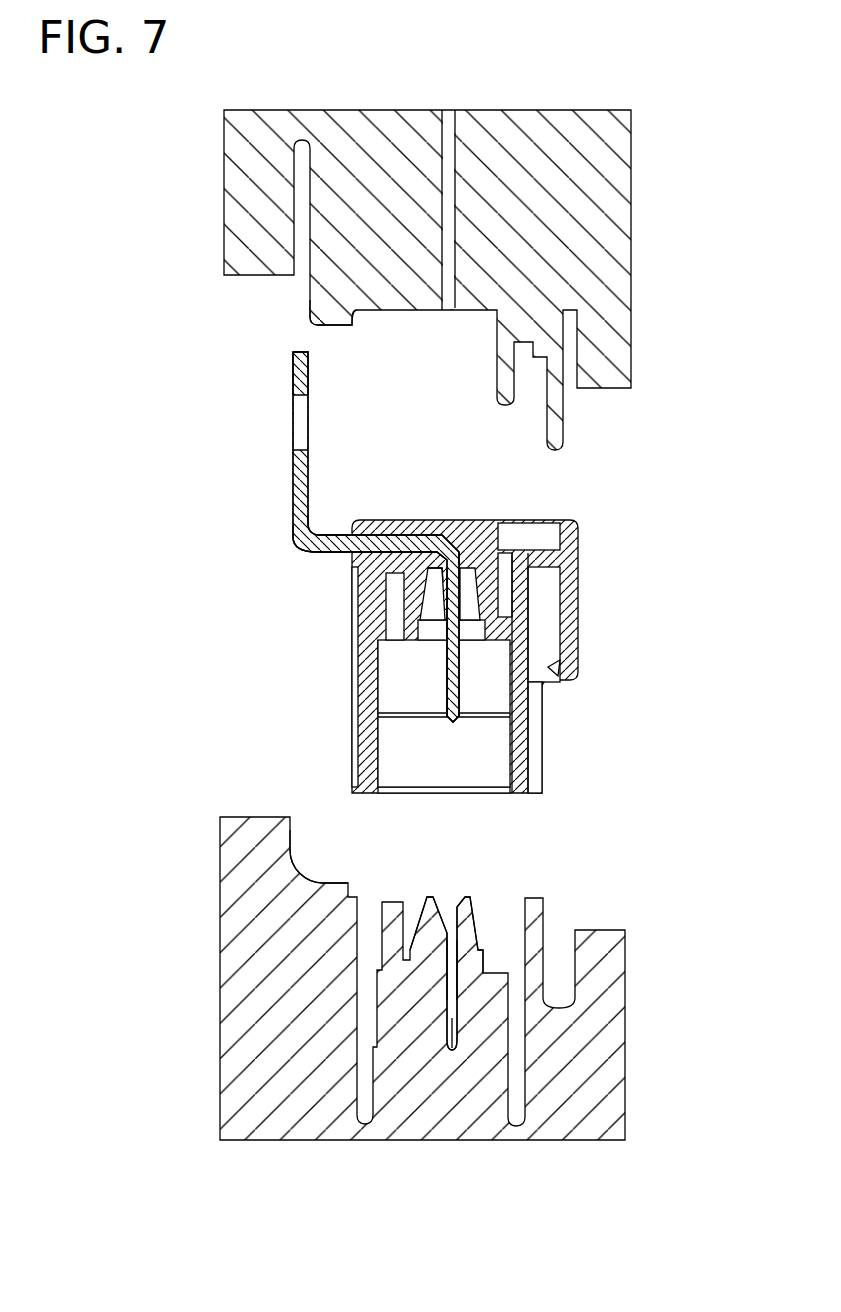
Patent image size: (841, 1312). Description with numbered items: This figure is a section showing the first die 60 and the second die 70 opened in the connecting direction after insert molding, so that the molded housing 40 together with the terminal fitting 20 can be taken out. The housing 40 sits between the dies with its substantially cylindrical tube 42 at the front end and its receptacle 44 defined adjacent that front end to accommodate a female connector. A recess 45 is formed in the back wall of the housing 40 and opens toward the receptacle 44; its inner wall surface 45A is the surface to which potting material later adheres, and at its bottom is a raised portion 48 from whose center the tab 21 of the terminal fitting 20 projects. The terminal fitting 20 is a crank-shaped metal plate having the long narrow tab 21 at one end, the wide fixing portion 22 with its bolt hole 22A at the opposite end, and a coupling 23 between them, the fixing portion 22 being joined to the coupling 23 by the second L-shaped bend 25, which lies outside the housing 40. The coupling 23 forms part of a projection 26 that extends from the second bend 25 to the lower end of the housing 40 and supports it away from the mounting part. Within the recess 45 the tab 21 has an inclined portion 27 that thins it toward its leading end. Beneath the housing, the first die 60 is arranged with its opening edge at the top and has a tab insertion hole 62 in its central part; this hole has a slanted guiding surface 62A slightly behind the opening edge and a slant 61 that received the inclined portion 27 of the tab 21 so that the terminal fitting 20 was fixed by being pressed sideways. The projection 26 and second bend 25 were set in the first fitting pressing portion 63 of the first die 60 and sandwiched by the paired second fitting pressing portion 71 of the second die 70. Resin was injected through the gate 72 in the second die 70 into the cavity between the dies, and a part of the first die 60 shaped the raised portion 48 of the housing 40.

The terminal fitting 20 is at (445, 594).
The tab 21 is at (460, 673).
The fixing portion 22 is at (298, 371).
The bolt hole 22A is at (298, 397).
The coupling 23 is at (392, 540).
The second L-shaped bend 25 is at (303, 546).
The projection 26 is at (312, 531).
The inclined portion 27 is at (438, 585).
The housing 40 is at (457, 678).
The cylindrical tube 42 is at (372, 635).
The receptacle 44 is at (519, 750).
The recess 45 is at (362, 702).
The inner wall surface 45A is at (430, 594).
The raised portion 48 is at (440, 568).
The first die 60 is at (457, 998).
The slant 61 is at (457, 917).
The tab insertion hole 62 is at (452, 1052).
The slanted guiding surface 62A is at (436, 902).
The first fitting pressing portion 63 is at (333, 878).
The second die 70 is at (461, 280).
The second fitting pressing portion 71 is at (340, 329).
The gate 72 is at (447, 308).